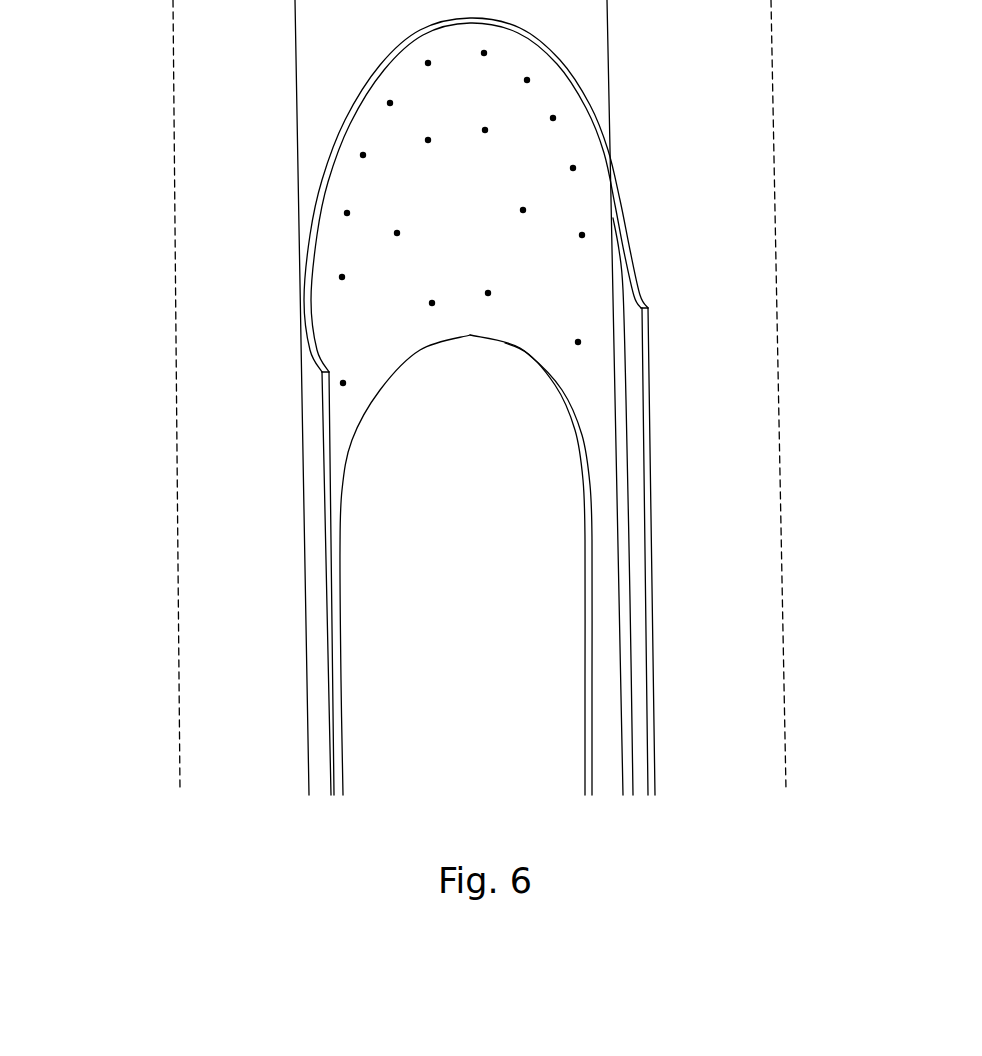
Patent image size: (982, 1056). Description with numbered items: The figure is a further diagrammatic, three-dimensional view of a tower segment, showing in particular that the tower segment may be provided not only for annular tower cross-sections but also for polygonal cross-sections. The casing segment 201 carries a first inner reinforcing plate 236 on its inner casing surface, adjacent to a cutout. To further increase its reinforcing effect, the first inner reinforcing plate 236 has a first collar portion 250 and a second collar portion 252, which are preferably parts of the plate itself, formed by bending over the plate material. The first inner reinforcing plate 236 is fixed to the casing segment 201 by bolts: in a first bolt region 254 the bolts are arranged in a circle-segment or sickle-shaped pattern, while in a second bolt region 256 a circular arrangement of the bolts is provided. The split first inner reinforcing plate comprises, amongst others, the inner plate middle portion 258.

The casing segment 201 is at (234, 83).
The first inner reinforcing plate 236 is at (306, 236).
The first collar portion 250 is at (643, 410).
The second collar portion 252 is at (318, 616).
The first bolt region 254 is at (582, 168).
The pore 256 is at (537, 205).
The inner plate middle portion 258 is at (607, 738).